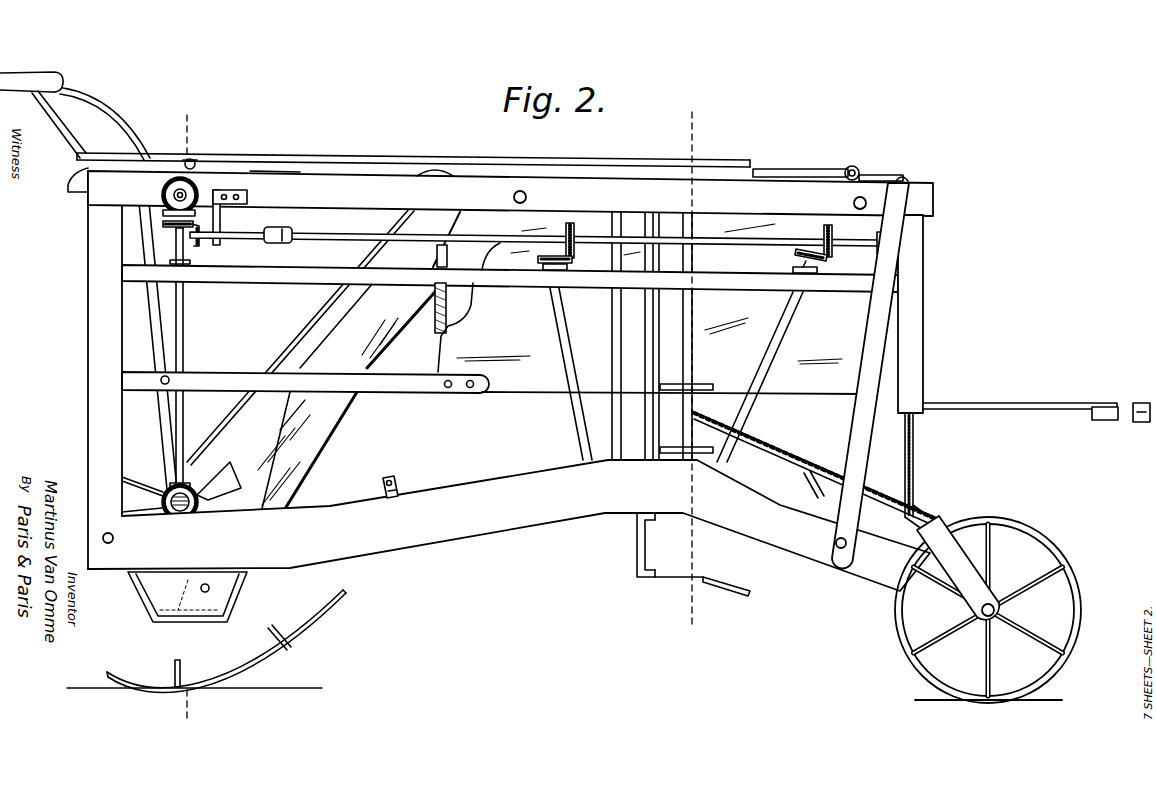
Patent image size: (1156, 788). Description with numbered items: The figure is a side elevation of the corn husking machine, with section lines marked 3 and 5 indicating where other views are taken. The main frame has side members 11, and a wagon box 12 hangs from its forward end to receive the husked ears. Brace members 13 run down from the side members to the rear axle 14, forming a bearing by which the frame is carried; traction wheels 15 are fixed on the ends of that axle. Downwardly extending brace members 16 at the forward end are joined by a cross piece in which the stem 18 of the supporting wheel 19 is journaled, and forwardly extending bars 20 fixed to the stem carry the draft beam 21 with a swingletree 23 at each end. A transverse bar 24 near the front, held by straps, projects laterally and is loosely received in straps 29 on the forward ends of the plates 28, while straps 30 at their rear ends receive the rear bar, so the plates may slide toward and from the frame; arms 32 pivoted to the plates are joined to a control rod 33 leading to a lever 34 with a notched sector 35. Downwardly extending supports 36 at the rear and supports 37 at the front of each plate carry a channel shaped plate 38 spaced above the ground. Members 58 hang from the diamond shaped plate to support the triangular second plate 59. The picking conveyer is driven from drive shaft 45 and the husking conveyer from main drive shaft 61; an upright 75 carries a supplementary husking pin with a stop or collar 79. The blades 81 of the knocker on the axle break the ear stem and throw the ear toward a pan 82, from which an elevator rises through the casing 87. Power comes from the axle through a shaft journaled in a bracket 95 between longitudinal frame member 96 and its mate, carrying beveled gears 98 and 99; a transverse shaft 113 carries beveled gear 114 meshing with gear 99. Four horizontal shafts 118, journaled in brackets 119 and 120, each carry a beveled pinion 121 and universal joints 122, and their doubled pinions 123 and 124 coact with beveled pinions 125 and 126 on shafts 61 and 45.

The section line 3- 3 is at (205, 112).
The section line 5- 5 is at (712, 124).
The side members 11 is at (510, 193).
The wagon box 12 is at (444, 262).
The brace members 13 is at (158, 334).
The rear axle 14 is at (180, 516).
The traction wheels 15 is at (333, 620).
The downwardly extending brace members 16 is at (918, 333).
The stem 18 is at (913, 456).
The supporting wheel 19 is at (1054, 555).
The forwardly extending bars 20 is at (992, 404).
The draft beam 21 is at (1101, 421).
The swingletree 23 is at (1143, 423).
The bar 24 is at (860, 173).
The plates 28 is at (278, 172).
The straps 29 is at (851, 166).
The straps 30 is at (197, 160).
The arms 32 is at (776, 170).
The control rod 33 is at (398, 160).
The lever 34 is at (58, 122).
The notched sector 35 is at (68, 185).
The downwardly extending supports 36 is at (90, 369).
The supports 37 is at (851, 445).
The channel shaped plate 38 is at (509, 525).
The drive shaft 45 is at (767, 366).
The members 58 is at (636, 546).
The second plate 59 is at (705, 575).
The main drive shaft 61 is at (580, 423).
The upright 75 is at (404, 492).
The stop or collar 79 is at (397, 482).
The blades 81 is at (231, 487).
The pan 82 is at (187, 597).
The casing 87 is at (323, 362).
The bracket 95 is at (198, 241).
The longitudinal frame member 96 is at (198, 273).
The beveled gear 98 is at (163, 225).
The beveled gear 99 is at (163, 213).
The transverse shaft 113 is at (198, 194).
The beveled gear 114 is at (178, 178).
The shafts 118 is at (309, 233).
The brackets 119 is at (220, 224).
The brackets 120 is at (877, 240).
The beveled pinion 121 is at (190, 229).
The universal joints 122 is at (278, 242).
The doubled pinion 123 is at (567, 226).
The doubled pinion 124 is at (823, 234).
The beveled pinion 125 is at (573, 261).
The beveled pinion 126 is at (831, 258).